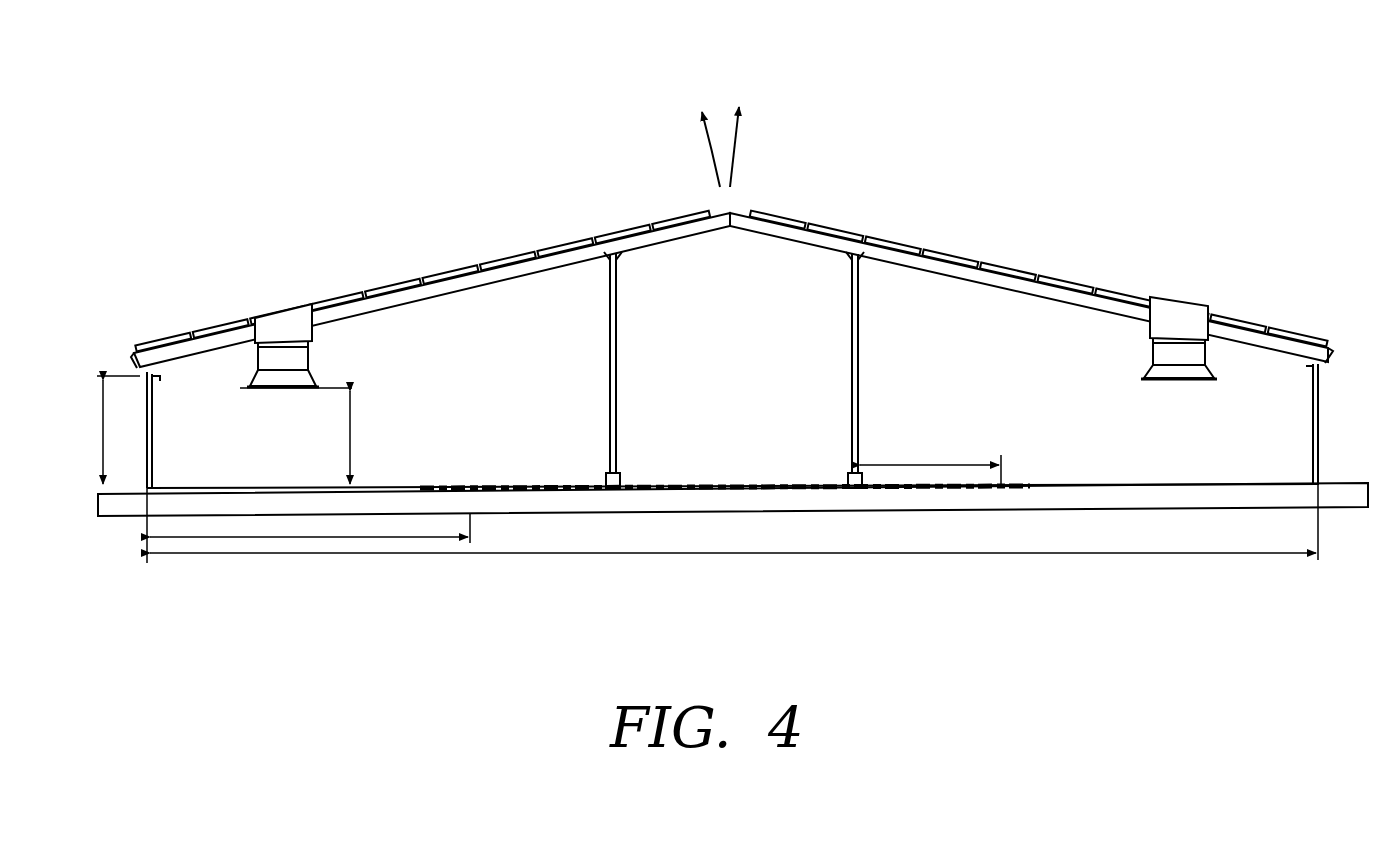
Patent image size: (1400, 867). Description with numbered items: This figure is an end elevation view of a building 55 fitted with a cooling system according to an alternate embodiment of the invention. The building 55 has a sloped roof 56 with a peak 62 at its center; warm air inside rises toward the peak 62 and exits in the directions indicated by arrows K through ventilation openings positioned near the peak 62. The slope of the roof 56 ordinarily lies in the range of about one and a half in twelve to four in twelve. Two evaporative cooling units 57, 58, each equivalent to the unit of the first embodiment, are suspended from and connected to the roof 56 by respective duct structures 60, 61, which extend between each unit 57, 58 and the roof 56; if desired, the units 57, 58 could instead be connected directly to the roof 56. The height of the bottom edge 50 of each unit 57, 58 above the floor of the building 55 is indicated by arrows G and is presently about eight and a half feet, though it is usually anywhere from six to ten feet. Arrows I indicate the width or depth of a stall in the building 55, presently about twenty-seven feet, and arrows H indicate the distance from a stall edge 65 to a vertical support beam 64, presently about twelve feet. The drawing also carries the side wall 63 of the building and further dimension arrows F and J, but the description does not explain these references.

The building 55 is at (972, 164).
The sloped roof 56 is at (503, 260).
The peak 62 is at (694, 211).
The duct structure 60 is at (283, 317).
The duct structure 61 is at (1198, 318).
The evaporative cooling unit 57 is at (322, 357).
The evaporative cooling unit 58 is at (1146, 363).
The bottom edge 50 is at (258, 386).
The vertical support beam 64 is at (851, 320).
The side wall 63 is at (1322, 445).
The stall edge 65 is at (470, 487).
The wall height dimension F is at (104, 442).
The distance of bottom edge above floor G is at (350, 442).
The distance from stall edge to support beam H is at (967, 463).
The stall width I is at (283, 540).
The overall width dimension J is at (727, 555).
The air exit direction arrows K is at (738, 155).